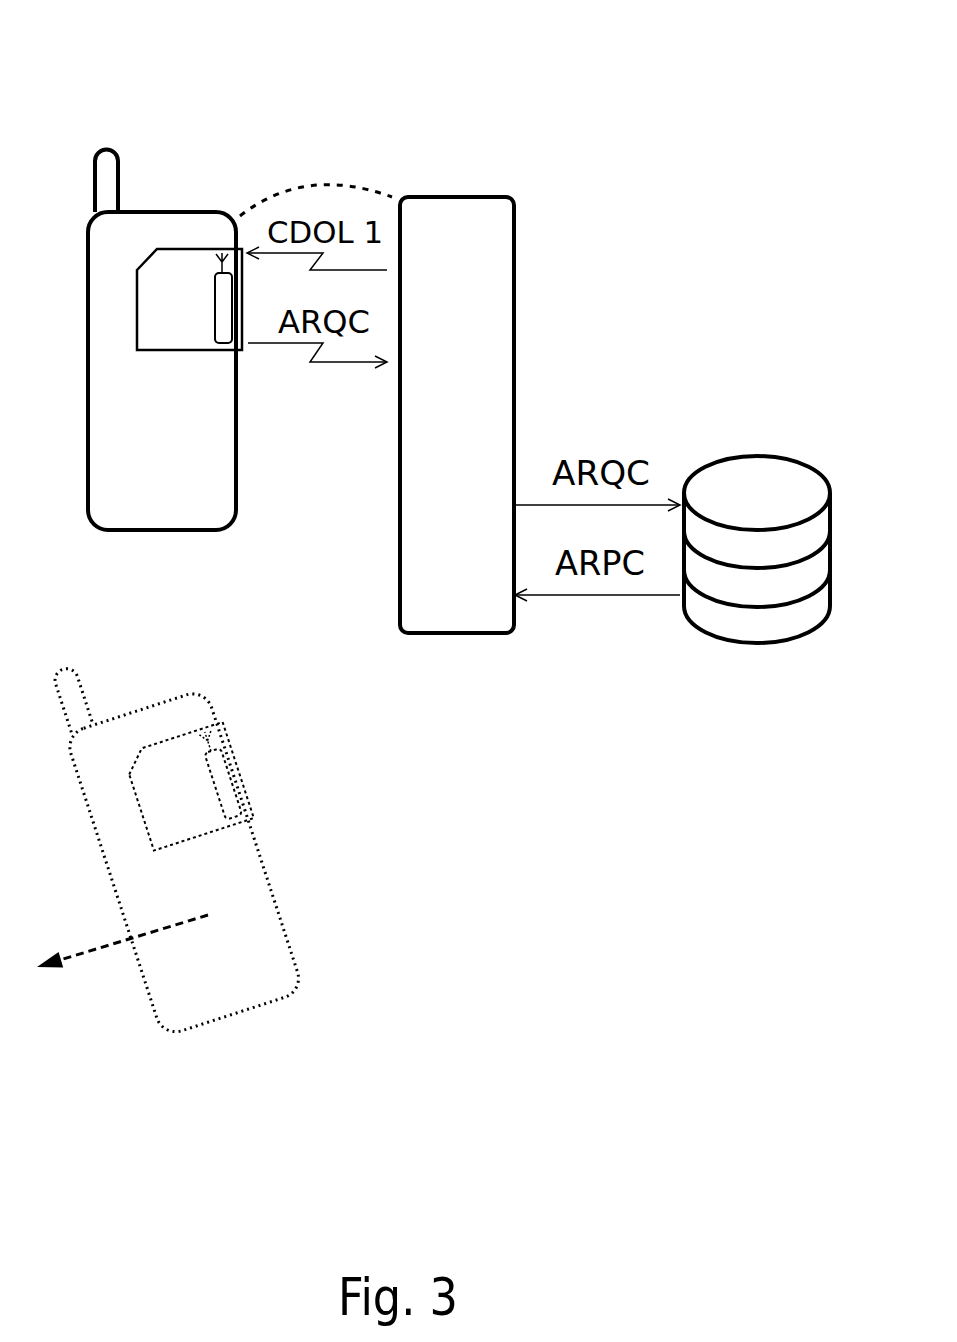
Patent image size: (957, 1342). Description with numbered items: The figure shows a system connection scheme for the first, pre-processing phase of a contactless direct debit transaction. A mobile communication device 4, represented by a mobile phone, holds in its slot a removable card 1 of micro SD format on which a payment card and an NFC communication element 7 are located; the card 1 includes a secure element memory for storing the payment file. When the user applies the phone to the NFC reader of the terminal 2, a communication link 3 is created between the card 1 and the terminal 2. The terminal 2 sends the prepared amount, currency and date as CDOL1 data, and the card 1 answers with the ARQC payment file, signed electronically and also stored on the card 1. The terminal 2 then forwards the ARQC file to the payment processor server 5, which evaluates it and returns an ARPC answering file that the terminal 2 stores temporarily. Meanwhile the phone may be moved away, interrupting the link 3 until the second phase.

The removable card 1 is at (205, 260).
The terminal 2 is at (458, 272).
The communication link 3 is at (305, 183).
The mobile communication device 4 is at (167, 725).
The payment processor server 5 is at (717, 497).
The NFC communication element 7 is at (225, 340).